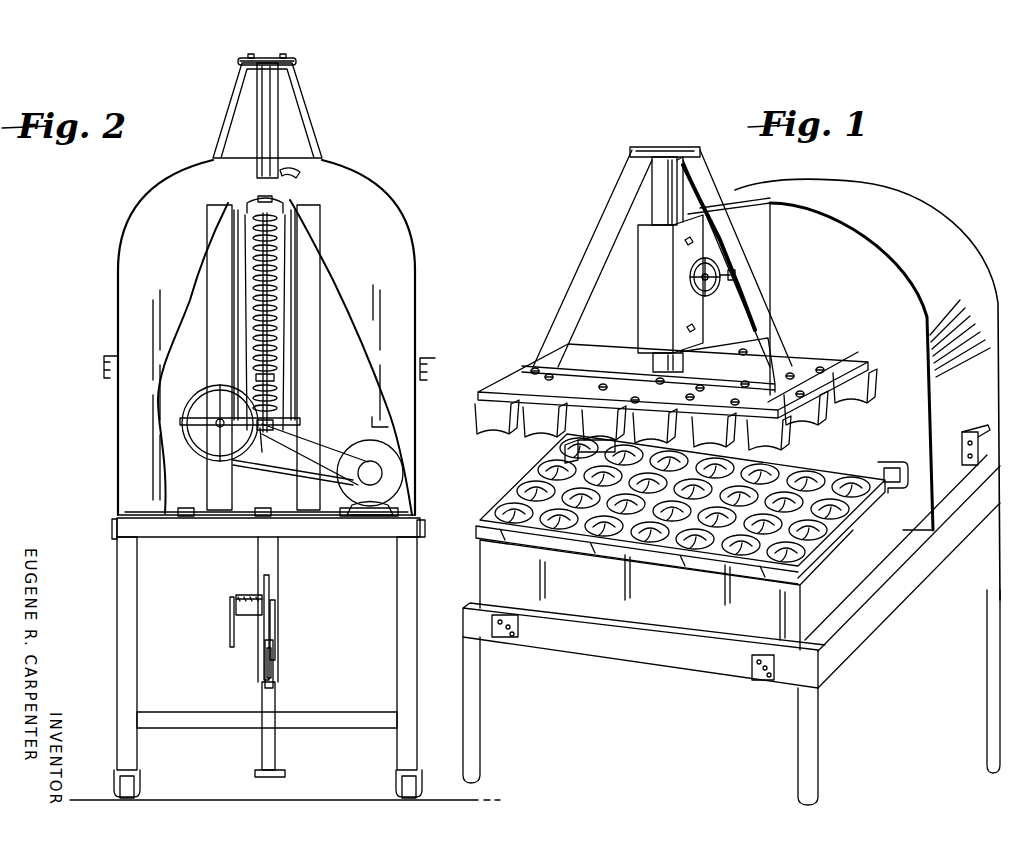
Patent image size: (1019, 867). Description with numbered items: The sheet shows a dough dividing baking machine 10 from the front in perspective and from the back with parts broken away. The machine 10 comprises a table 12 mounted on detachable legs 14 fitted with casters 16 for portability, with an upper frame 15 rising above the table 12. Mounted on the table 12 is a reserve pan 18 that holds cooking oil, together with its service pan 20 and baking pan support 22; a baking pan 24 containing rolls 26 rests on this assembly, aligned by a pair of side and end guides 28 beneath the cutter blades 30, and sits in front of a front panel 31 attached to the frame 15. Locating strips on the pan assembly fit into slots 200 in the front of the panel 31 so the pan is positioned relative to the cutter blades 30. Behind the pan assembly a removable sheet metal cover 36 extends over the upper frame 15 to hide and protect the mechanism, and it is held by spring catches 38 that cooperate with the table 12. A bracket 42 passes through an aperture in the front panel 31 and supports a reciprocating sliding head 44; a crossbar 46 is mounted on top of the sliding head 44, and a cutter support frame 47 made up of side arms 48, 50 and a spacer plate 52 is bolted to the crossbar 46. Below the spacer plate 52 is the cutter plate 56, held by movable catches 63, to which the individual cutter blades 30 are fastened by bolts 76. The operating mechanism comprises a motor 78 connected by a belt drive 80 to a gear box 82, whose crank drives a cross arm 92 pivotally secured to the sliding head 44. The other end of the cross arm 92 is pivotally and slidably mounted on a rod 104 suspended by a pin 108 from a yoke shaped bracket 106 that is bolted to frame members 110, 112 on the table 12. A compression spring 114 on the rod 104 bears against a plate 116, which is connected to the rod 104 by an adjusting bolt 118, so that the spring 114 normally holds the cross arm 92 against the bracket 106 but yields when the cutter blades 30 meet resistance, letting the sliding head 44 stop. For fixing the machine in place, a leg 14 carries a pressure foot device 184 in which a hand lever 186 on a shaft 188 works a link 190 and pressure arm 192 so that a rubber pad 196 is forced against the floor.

In FIG. 2, the machine 10 is at (122, 487).
In FIG. 2, the table 12 is at (192, 537).
In FIG. 1, the table 12 is at (712, 264).
In FIG. 2, the legs 14 is at (398, 653).
In FIG. 1, the legs 14 is at (465, 653).
In FIG. 2, the upper frame 15 is at (117, 280).
In FIG. 2, the casters 16 is at (140, 792).
In FIG. 1, the reserve pan 18 is at (873, 579).
In FIG. 1, the service pan 20 is at (822, 570).
In FIG. 1, the baking pan support 22 is at (478, 526).
In FIG. 1, the baking pan 24 is at (492, 512).
In FIG. 1, the rolls 26 is at (511, 503).
In FIG. 1, the side and end guides 28 is at (563, 453).
In FIG. 1, the cutter blades 30 is at (493, 423).
In FIG. 1, the front panel 31 is at (863, 262).
In FIG. 2, the sheet metal cover 36 is at (398, 236).
In FIG. 2, the spring catches 38 is at (106, 356).
In FIG. 1, the spring catches 38 is at (983, 427).
In FIG. 1, the bracket 42 is at (738, 329).
In FIG. 2, the sliding head 44 is at (270, 147).
In FIG. 1, the sliding head 44 is at (662, 192).
In FIG. 2, the crossbar 46 is at (270, 62).
In FIG. 1, the crossbar 46 is at (630, 158).
In FIG. 1, the cutter support frame 47 is at (645, 133).
In FIG. 1, the side arm 48 is at (701, 168).
In FIG. 1, the side arm 50 is at (593, 264).
In FIG. 1, the spacer plate 52 is at (747, 367).
In FIG. 1, the cutter plate 56 is at (603, 351).
In FIG. 1, the movable catches 63 is at (549, 372).
In FIG. 1, the bolts 76 is at (535, 367).
In FIG. 2, the motor 78 is at (362, 449).
In FIG. 2, the belt drive 80 is at (315, 454).
In FIG. 2, the gear box 82 is at (258, 487).
In FIG. 2, the cross arm 92 is at (250, 210).
In FIG. 2, the rod 104 is at (262, 198).
In FIG. 2, the yoke shaped bracket 106 is at (296, 247).
In FIG. 2, the pin 108 is at (287, 201).
In FIG. 2, the frame member 110 is at (316, 367).
In FIG. 2, the frame member 112 is at (213, 366).
In FIG. 2, the compression spring 114 is at (274, 377).
In FIG. 2, the plate 116 is at (263, 430).
In FIG. 2, the bolt 118 is at (279, 446).
In FIG. 2, the pressure foot device 184 is at (279, 666).
In FIG. 2, the hand lever 186 is at (230, 631).
In FIG. 2, the shaft 188 is at (247, 595).
In FIG. 2, the link 190 is at (276, 588).
In FIG. 2, the pressure arm 192 is at (278, 624).
In FIG. 2, the pad 196 is at (284, 775).
In FIG. 2, the slots 200 is at (372, 425).